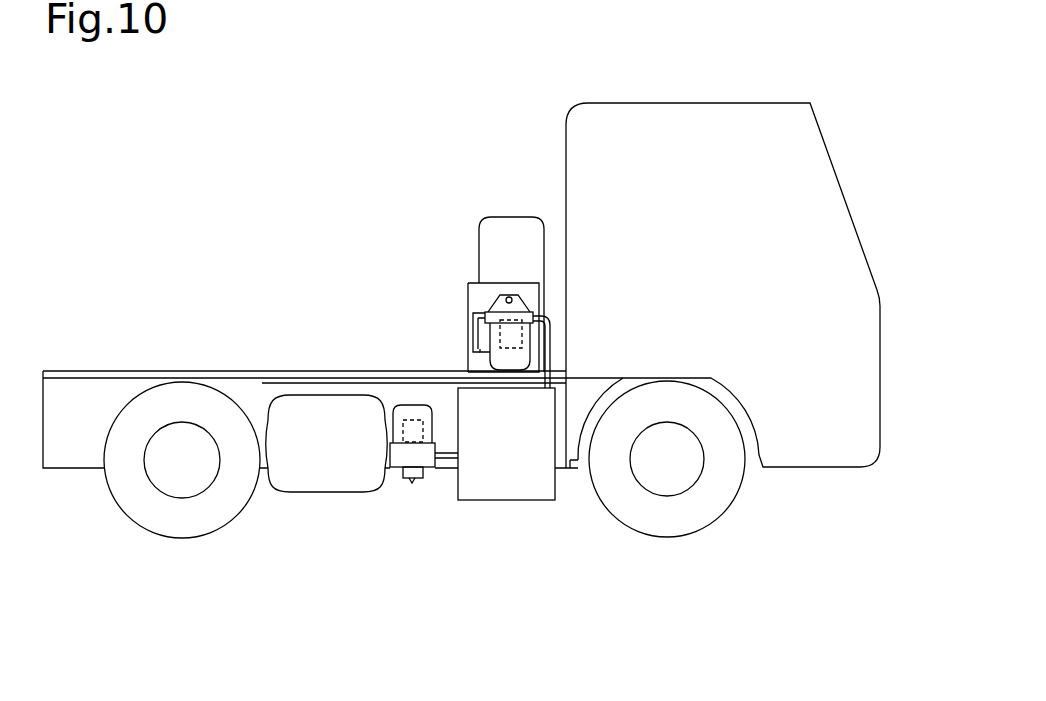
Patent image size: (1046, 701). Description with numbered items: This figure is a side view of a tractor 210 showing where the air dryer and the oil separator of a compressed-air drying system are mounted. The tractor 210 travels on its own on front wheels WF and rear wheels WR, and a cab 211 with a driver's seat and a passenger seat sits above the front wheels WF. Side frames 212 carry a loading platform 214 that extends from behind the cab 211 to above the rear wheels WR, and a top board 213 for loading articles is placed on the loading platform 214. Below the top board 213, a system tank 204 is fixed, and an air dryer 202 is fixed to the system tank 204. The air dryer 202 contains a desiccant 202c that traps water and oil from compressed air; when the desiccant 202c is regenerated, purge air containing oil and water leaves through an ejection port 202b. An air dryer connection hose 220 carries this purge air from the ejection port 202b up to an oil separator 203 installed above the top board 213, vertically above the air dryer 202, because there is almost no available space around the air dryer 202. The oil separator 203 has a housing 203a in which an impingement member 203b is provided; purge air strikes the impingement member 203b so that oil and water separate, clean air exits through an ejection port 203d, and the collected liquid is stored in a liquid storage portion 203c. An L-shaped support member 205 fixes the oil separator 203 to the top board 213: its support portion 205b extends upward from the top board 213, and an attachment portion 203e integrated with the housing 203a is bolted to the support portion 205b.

The tractor 210 is at (693, 103).
The cab 211 is at (566, 152).
The side frames 212 is at (63, 468).
The top board 213 is at (250, 371).
The loading platform 214 is at (368, 308).
The support member 205 is at (468, 283).
The support portion 205b is at (468, 289).
The oil separator 203 is at (496, 294).
The attachment portion 203e is at (512, 292).
The ejection port 203d is at (473, 323).
The impingement member 203b is at (550, 328).
The liquid storage portion 203c is at (490, 363).
The housing 203a is at (532, 347).
The air dryer 202 is at (433, 419).
The desiccant 202c is at (423, 432).
The ejection port 202b is at (413, 482).
The air dryer connection hose 220 is at (443, 462).
The system tank 204 is at (327, 492).
The rear wheels WR is at (223, 528).
The front wheels WF is at (704, 530).